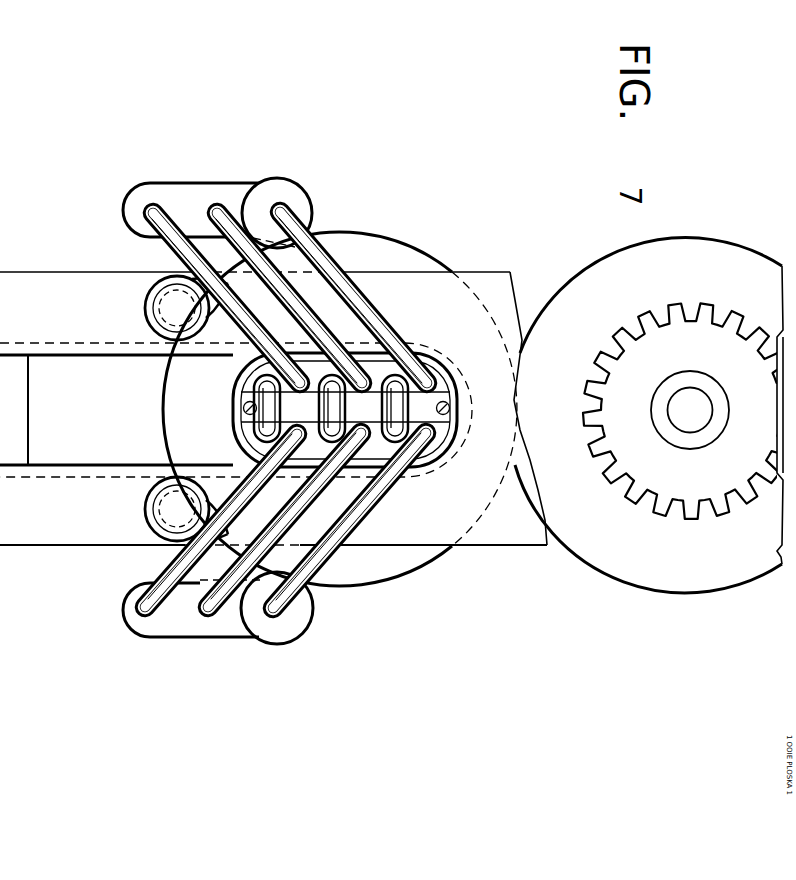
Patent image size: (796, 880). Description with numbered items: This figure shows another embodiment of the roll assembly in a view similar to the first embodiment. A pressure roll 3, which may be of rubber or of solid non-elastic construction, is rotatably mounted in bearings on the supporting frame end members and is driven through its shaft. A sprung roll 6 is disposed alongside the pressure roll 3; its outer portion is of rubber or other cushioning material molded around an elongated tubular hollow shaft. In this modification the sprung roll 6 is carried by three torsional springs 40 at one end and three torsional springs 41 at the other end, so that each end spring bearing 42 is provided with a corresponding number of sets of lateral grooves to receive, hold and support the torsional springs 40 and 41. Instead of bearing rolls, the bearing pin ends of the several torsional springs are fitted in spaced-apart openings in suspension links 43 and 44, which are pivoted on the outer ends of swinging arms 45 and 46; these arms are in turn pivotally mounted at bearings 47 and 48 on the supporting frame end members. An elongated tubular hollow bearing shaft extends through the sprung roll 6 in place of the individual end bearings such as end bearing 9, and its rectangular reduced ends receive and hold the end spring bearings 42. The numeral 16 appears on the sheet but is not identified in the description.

The pressure roll 3 is at (652, 557).
The sprung roll 6 is at (680, 470).
The end bearing 9 is at (407, 562).
The frame 16 is at (25, 517).
The torsional springs 40 is at (358, 518).
The torsional springs 41 is at (163, 303).
The end spring bearing 42 is at (343, 434).
The suspension link 43 is at (153, 188).
The suspension link 44 is at (152, 623).
The swinging arm 45 is at (218, 259).
The swinging arm 46 is at (230, 565).
The bearing 47 is at (238, 383).
The bearing 48 is at (160, 517).